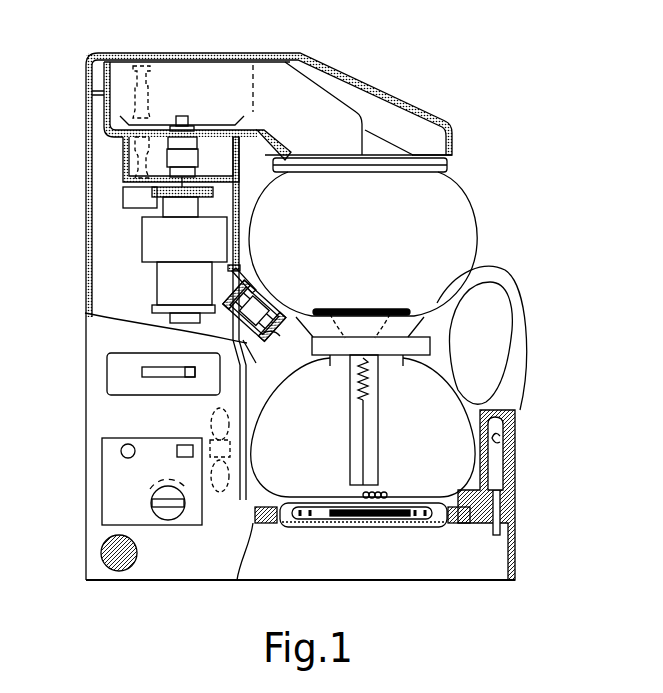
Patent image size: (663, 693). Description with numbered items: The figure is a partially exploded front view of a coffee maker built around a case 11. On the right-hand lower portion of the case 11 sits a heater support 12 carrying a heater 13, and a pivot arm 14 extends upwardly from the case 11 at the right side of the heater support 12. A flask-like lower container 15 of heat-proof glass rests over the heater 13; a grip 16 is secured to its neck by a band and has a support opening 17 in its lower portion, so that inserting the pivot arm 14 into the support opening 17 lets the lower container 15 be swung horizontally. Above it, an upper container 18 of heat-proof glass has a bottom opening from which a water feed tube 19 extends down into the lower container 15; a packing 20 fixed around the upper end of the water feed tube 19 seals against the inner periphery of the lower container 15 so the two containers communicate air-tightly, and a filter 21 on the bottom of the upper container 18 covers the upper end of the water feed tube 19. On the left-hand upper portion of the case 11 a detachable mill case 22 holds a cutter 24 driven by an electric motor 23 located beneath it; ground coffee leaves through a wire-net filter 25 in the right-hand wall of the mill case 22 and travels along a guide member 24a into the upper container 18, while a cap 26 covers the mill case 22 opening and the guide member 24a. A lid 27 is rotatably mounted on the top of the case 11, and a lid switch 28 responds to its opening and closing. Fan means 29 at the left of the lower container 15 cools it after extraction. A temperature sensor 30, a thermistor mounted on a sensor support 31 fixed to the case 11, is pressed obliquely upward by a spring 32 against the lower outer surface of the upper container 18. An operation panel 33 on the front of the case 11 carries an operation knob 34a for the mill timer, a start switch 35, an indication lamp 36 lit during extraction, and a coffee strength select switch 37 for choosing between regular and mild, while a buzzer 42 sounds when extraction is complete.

The case 11 is at (82, 393).
The heater support 12 is at (310, 527).
The heater 13 is at (333, 512).
The pivot arm 14 is at (498, 467).
The lower container 15 is at (457, 400).
The grip 16 is at (520, 318).
The support opening 17 is at (500, 440).
The upper container 18 is at (460, 190).
The water feed tube 19 is at (378, 460).
The packing 20 is at (330, 370).
The filter 21 is at (347, 309).
The mill case 22 is at (108, 82).
The electric motor 23 is at (142, 232).
The cutter 24 is at (211, 122).
The guide member 24a is at (284, 144).
The wire-net filter 25 is at (256, 96).
The cap 26 is at (202, 66).
The lid 27 is at (318, 57).
The lid switch 28 is at (150, 105).
The fan means 29 is at (220, 493).
The temperature sensor 30 is at (263, 288).
The sensor support 31 is at (273, 328).
The spring 32 is at (250, 358).
The operation panel 33 is at (95, 480).
The operation knob 34a is at (165, 513).
The start switch 35 is at (186, 444).
The indication lamp 36 is at (128, 443).
The coffee strength select switch 37 is at (187, 368).
The buzzer 42 is at (105, 571).